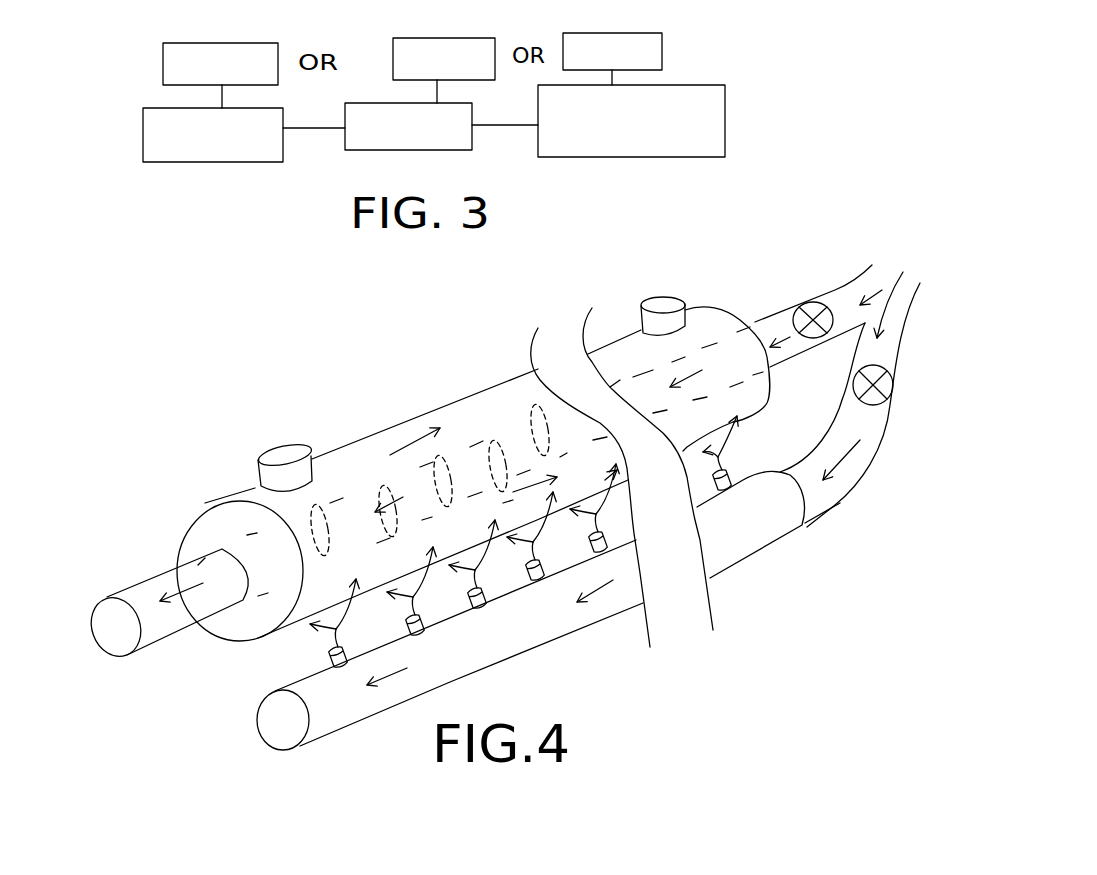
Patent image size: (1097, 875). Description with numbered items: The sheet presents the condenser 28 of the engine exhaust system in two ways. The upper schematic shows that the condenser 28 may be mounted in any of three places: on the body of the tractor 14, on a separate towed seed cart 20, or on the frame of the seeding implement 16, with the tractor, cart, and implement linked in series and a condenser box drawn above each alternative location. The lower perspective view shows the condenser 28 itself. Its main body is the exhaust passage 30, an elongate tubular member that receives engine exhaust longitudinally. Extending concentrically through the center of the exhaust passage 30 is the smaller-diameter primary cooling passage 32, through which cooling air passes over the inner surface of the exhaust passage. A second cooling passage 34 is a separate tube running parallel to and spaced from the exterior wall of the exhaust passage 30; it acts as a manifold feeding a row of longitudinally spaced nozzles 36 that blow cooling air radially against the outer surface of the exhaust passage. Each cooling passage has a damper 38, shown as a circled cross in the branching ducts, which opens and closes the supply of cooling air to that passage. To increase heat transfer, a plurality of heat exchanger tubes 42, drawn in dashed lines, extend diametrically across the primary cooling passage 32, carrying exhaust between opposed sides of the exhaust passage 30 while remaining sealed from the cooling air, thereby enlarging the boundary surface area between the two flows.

In FIG. 3, the tractor 14 is at (213, 163).
In FIG. 3, the seeding implement 16 is at (623, 156).
In FIG. 3, the cart 20 is at (425, 148).
In FIG. 3, the condenser 28 is at (202, 43).
In FIG. 4, the condenser 28 is at (84, 504).
In FIG. 4, the exhaust passage 30 is at (210, 523).
In FIG. 4, the primary cooling passage 32 is at (162, 633).
In FIG. 4, the second cooling passage 34 is at (287, 733).
In FIG. 4, the nozzles 36 is at (330, 657).
In FIG. 4, the damper 38 is at (802, 302).
In FIG. 4, the heat exchanger tubes 42 is at (383, 493).